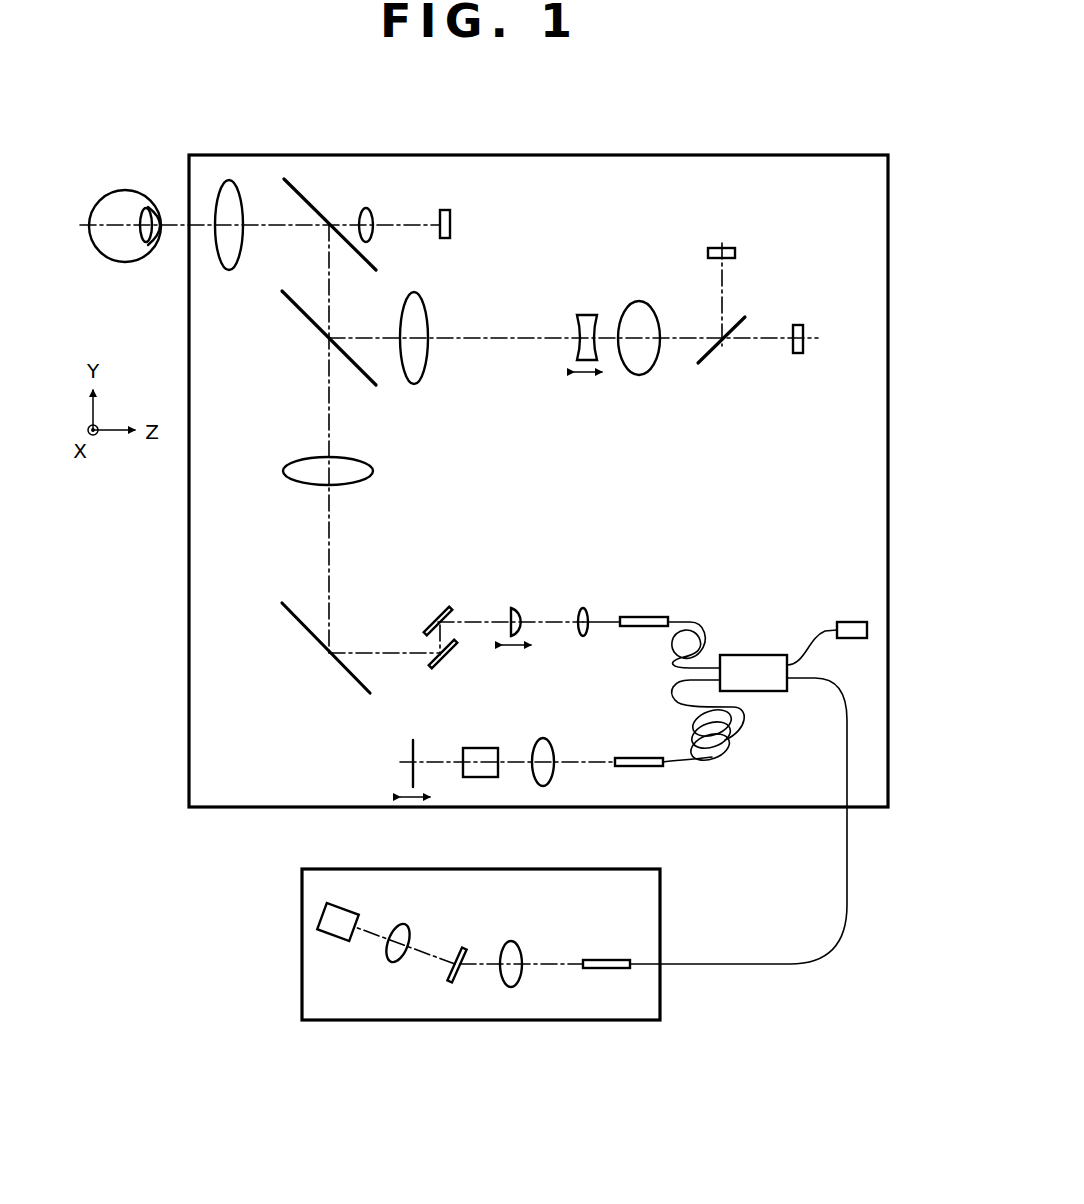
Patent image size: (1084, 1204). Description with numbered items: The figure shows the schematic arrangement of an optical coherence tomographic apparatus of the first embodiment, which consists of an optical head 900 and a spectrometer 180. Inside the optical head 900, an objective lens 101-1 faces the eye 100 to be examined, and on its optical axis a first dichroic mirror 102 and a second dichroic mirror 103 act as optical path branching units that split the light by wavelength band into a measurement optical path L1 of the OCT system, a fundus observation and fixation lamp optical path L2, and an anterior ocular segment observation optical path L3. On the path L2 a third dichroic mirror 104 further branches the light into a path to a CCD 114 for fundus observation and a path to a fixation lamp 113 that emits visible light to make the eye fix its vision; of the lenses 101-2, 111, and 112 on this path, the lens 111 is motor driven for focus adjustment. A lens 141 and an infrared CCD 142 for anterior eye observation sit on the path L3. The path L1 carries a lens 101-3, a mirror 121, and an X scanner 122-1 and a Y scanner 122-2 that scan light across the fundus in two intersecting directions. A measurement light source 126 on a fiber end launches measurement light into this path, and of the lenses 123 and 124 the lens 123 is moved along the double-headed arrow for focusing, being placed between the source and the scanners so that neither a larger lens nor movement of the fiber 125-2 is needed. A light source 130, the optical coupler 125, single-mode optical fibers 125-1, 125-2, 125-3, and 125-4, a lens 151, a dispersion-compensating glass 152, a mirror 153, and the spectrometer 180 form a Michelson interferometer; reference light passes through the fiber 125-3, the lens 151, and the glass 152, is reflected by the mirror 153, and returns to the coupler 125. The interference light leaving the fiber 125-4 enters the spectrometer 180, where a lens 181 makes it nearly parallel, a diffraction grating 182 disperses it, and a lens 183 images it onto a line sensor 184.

The eye to be examined 100 is at (125, 190).
The objective lens 101-1 is at (229, 180).
The lens 101-2 is at (428, 318).
The lens 101-3 is at (298, 463).
The first dichroic mirror 102 is at (302, 195).
The second dichroic mirror 103 is at (302, 311).
The third dichroic mirror 104 is at (735, 317).
The lens 111 is at (587, 315).
The lens 112 is at (639, 301).
The fixation lamp 113 is at (800, 325).
The CCD 114 is at (730, 248).
The mirror 121 is at (283, 605).
The X scanner 122-1 is at (452, 652).
The Y scanner 122-2 is at (430, 625).
The lens 123 is at (515, 608).
The lens 124 is at (583, 608).
The optical coupler 125 is at (748, 655).
The optical fiber 125-1 is at (813, 630).
The optical fiber 125-2 is at (697, 625).
The optical fiber 125-3 is at (673, 697).
The optical fiber 125-4 is at (847, 768).
The measurement light source 126 is at (644, 617).
The light source 130 is at (852, 622).
The lens 141 is at (370, 209).
The infrared CCD 142 is at (445, 210).
The lens 151 is at (543, 738).
The dispersion-compensating glass 152 is at (480, 748).
The mirror 153 is at (410, 757).
The spectrometer 180 is at (615, 869).
The lens 181 is at (511, 941).
The diffraction grating 182 is at (461, 948).
The lens 183 is at (403, 925).
The line sensor 184 is at (345, 910).
The optical head 900 is at (574, 155).
The measurement optical path L1 is at (329, 522).
The fundus observation optical path/fixation lamp optical path L2 is at (477, 340).
The anterior ocular segment observation optical path L3 is at (420, 226).